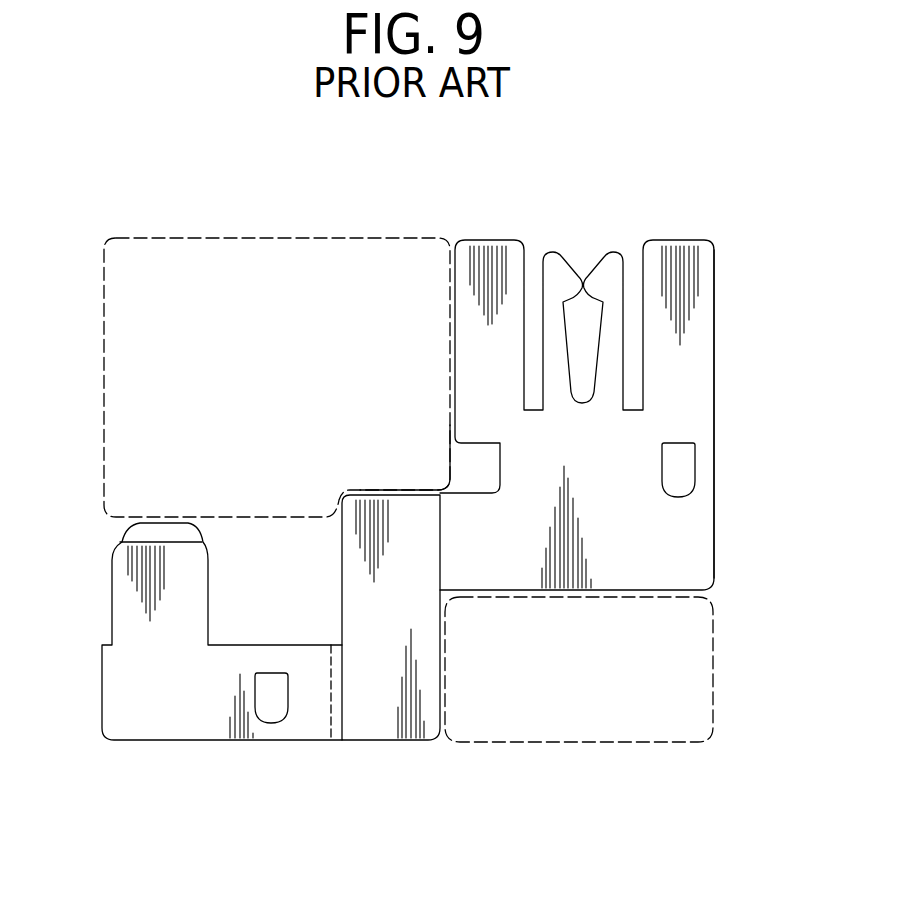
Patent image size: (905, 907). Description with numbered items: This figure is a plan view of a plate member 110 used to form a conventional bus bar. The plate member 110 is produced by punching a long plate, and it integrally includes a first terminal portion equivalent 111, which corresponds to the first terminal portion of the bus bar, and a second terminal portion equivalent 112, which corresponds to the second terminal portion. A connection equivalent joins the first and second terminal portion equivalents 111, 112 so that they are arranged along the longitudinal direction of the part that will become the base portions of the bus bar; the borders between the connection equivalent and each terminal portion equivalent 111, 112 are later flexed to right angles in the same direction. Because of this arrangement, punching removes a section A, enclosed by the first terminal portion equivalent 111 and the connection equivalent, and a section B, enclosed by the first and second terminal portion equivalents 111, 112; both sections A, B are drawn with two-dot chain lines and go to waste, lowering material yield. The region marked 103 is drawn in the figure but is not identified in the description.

The connecting portion 103 is at (362, 560).
The plate member 110 is at (425, 196).
The first terminal portion equivalent 111 is at (714, 355).
The second terminal portion equivalent 112 is at (257, 744).
The section A is at (660, 742).
The section B is at (238, 238).